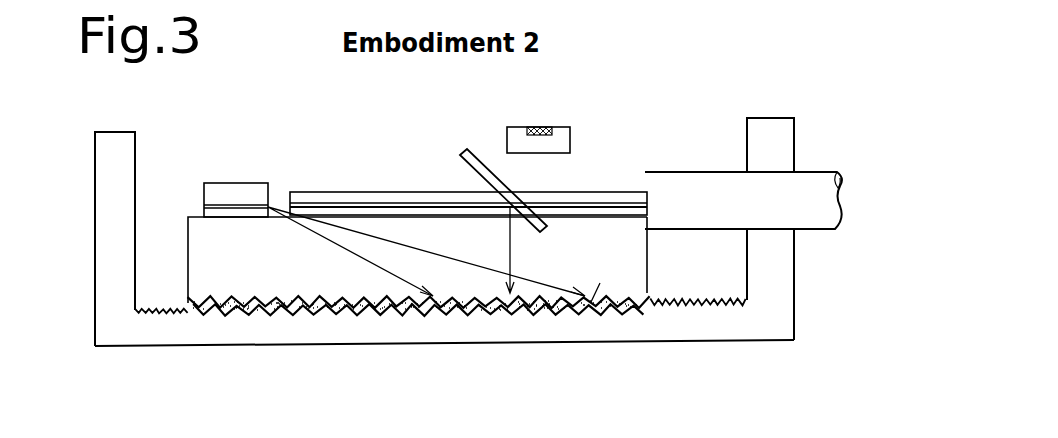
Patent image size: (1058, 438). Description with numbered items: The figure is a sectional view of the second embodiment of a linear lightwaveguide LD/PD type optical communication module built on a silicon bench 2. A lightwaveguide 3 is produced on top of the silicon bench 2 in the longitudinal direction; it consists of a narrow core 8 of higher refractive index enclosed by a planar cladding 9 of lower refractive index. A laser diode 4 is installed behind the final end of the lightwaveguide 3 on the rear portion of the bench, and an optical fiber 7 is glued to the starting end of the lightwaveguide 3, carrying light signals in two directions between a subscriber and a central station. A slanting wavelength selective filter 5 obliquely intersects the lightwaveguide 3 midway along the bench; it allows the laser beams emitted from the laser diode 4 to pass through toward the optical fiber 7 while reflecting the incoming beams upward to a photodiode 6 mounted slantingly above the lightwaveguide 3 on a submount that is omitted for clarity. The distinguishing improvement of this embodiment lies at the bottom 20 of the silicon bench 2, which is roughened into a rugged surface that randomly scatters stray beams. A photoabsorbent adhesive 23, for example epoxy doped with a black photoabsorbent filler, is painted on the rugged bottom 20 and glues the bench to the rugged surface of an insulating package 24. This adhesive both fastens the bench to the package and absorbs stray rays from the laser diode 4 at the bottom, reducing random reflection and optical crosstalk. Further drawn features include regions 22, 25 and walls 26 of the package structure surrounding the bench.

The silicon bench 2 is at (258, 275).
The lightwaveguide 3 is at (388, 207).
The laser diode 4 is at (233, 190).
The wavelength selective filter 5 is at (468, 148).
The photodiode 6 is at (558, 147).
The optical fiber 7 is at (677, 197).
The core 8 is at (620, 207).
The cladding 9 is at (596, 200).
The bottom 20 is at (398, 313).
The side face 22 is at (647, 272).
The photoabsorbent adhesive 23 is at (470, 310).
The insulating package 24 is at (702, 328).
The gap 25 is at (172, 335).
The side wall 26 is at (108, 170).